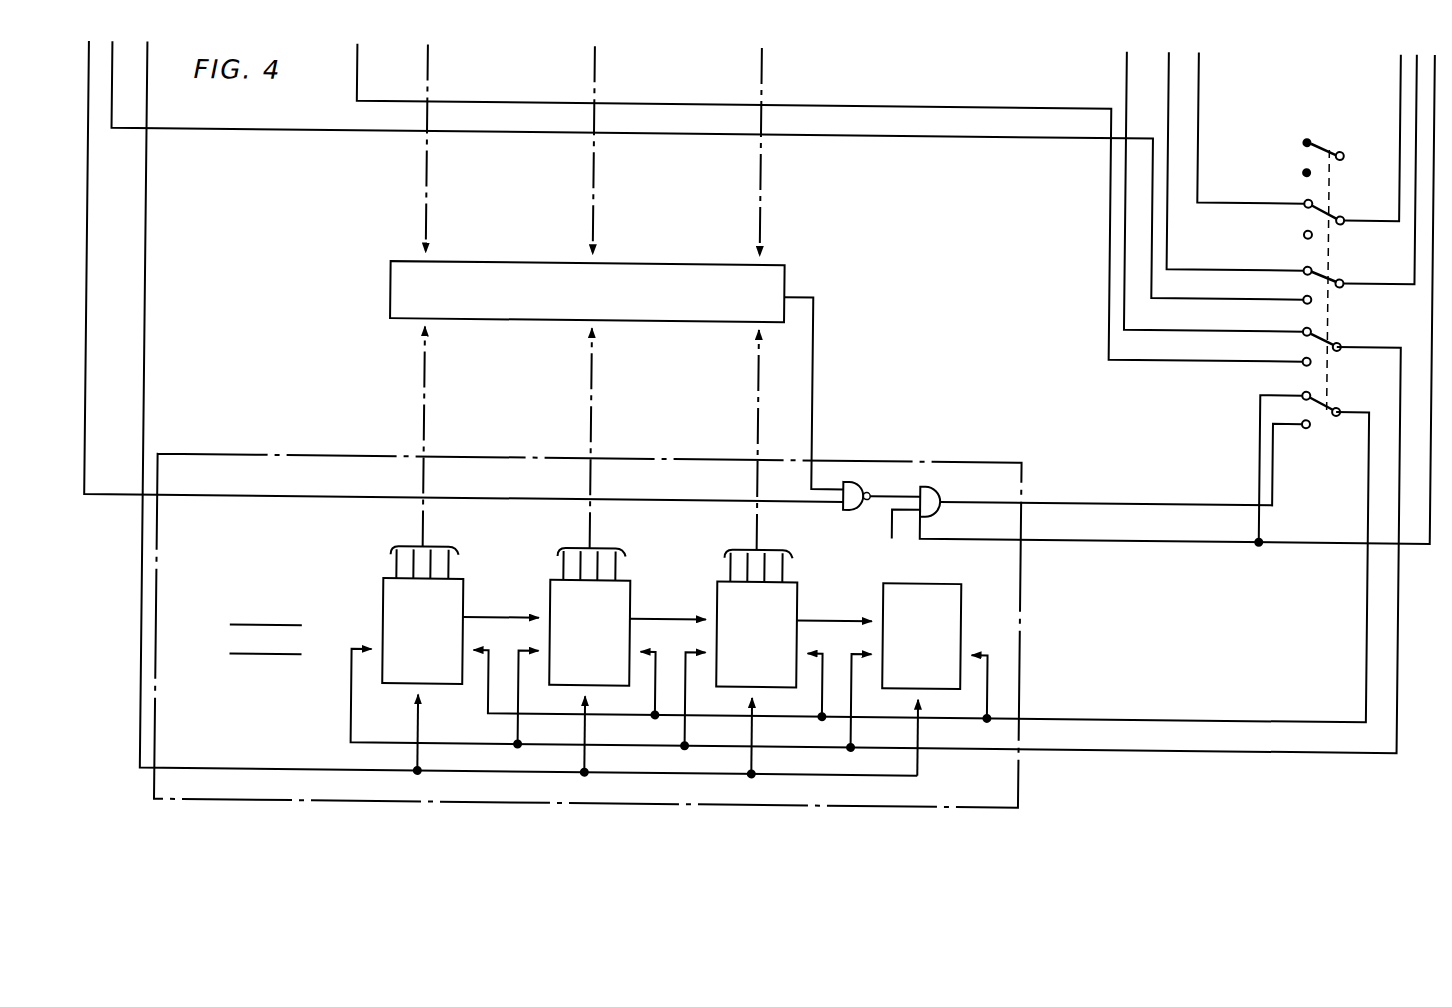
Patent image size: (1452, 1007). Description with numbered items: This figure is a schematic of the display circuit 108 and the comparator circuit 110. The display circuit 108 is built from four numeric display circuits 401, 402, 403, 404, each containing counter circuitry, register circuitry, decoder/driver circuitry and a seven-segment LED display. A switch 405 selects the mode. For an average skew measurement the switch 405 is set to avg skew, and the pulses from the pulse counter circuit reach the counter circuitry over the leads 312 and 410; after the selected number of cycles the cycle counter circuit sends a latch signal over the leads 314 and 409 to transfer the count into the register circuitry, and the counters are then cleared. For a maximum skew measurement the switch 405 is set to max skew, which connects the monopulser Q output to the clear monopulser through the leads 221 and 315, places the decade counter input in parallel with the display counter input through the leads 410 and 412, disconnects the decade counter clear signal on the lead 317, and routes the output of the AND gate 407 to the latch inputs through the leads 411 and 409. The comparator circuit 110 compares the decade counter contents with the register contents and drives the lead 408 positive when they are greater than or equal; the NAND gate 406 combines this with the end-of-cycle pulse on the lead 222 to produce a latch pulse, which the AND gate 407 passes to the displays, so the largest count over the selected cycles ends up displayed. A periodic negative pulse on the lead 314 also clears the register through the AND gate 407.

The comparator circuit 110 is at (389, 300).
The display circuit 108 is at (260, 456).
The lead 222 is at (111, 501).
The numeric display circuit 401 is at (385, 595).
The numeric display circuit 402 is at (552, 595).
The numeric display circuit 403 is at (719, 595).
The numeric display circuit 404 is at (885, 597).
The switch 405 is at (1321, 136).
The NAND gate 406 is at (857, 481).
The AND gate 407 is at (935, 486).
The lead 408 is at (814, 321).
The lead 409 is at (1063, 716).
The lead 410 is at (1067, 748).
The lead 411 is at (1151, 499).
The lead 412 is at (1219, 357).
The lead 312 is at (1223, 328).
The lead 221 is at (1233, 296).
The lead 314 is at (1244, 263).
The lead 315 is at (1363, 278).
The lead 317 is at (1360, 214).